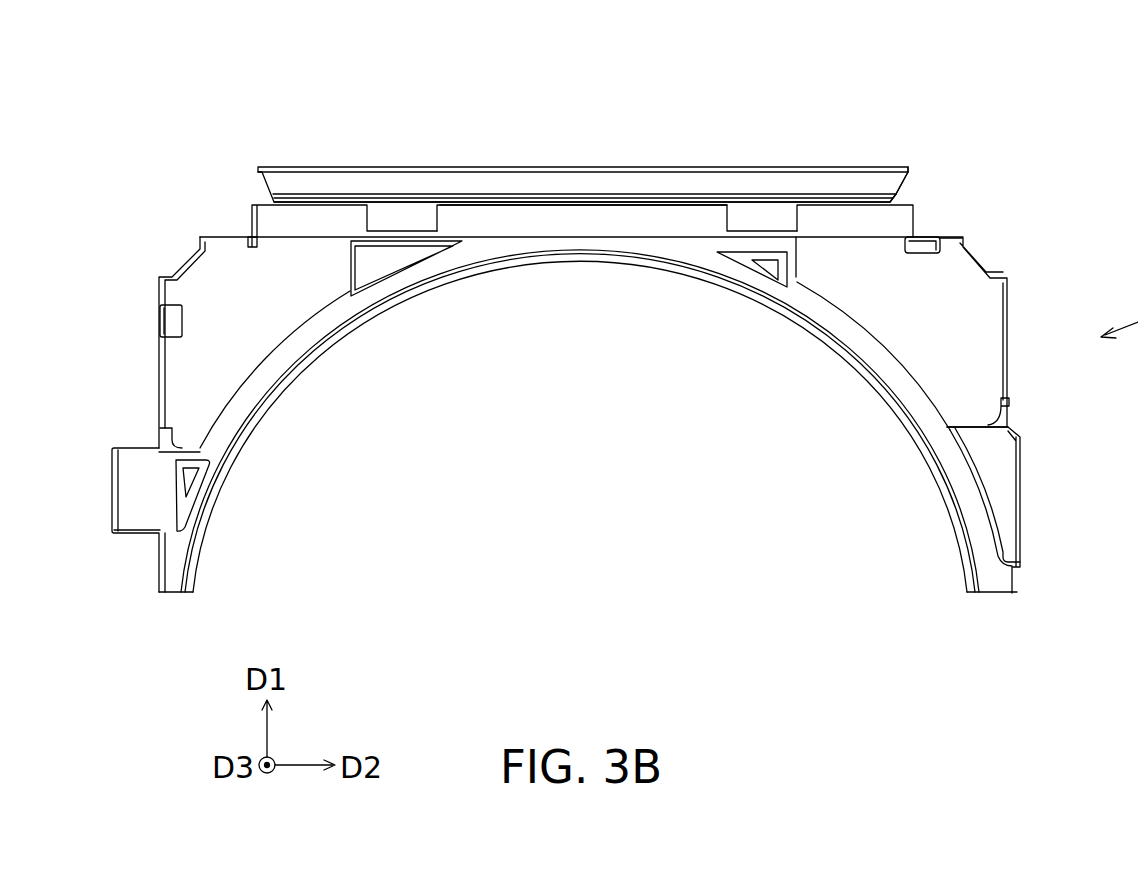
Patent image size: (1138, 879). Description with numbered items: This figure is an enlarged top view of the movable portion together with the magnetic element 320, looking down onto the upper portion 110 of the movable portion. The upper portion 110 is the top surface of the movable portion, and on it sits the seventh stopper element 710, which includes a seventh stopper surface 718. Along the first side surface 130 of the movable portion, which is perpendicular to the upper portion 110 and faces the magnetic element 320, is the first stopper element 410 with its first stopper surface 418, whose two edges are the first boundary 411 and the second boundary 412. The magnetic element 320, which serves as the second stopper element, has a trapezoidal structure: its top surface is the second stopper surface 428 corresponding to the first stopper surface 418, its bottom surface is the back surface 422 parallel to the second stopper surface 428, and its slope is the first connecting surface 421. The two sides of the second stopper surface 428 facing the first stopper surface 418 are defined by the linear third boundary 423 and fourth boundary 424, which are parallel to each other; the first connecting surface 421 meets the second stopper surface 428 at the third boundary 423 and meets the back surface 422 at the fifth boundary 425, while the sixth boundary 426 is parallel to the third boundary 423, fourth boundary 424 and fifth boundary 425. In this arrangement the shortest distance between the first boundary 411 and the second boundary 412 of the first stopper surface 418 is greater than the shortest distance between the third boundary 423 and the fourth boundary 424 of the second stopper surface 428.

The upper portion 110 is at (532, 414).
The first side surface 130 is at (225, 235).
The magnetic element 320 is at (583, 144).
The first stopper element 410 is at (587, 252).
The first boundary 411 is at (917, 208).
The second boundary 412 is at (250, 206).
The first stopper surface 418 is at (620, 205).
The first connecting surface 421 is at (903, 183).
The back surface 422 is at (802, 167).
The third boundary 423 is at (892, 198).
The fourth boundary 424 is at (273, 196).
The fifth boundary 425 is at (907, 172).
The sixth boundary 426 is at (258, 170).
The second stopper surface 428 is at (617, 221).
The seventh stopper element 710 is at (378, 270).
The seventh stopper surface 718 is at (401, 257).